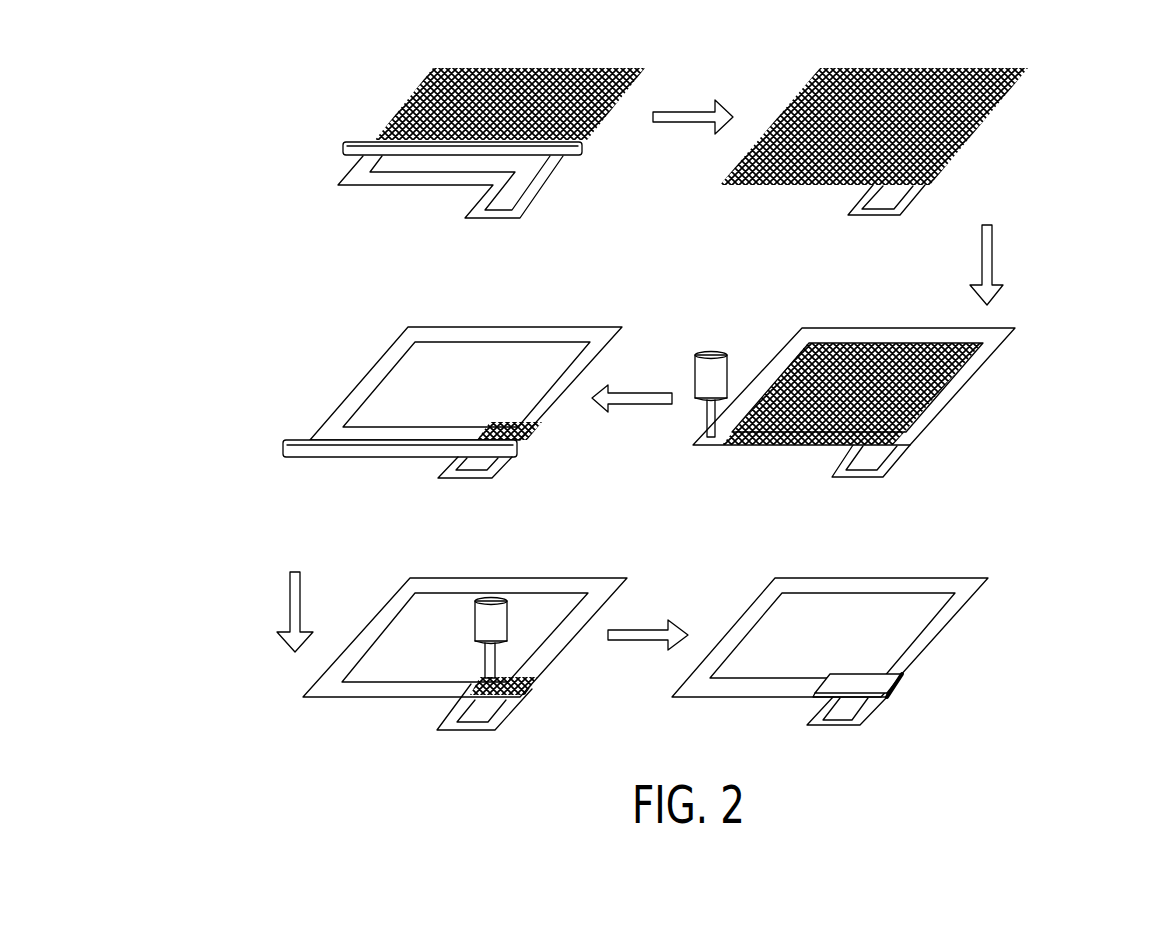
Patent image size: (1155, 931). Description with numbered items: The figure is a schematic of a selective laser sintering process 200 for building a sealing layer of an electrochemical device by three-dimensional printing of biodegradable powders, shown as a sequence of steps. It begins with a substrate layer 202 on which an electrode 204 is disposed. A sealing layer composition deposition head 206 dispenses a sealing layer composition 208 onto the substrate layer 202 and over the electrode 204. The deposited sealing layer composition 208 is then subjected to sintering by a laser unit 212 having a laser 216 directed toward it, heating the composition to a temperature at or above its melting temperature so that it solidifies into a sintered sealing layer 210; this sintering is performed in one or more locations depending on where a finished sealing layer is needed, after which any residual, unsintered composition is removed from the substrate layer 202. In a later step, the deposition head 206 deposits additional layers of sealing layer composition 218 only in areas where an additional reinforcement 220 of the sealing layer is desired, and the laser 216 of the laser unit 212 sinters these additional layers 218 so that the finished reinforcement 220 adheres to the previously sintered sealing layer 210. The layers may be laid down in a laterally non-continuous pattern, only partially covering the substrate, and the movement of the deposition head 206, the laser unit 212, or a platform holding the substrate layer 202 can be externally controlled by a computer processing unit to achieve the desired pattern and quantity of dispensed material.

The selective laser sintering process 200 is at (276, 124).
The substrate layer 202 is at (363, 181).
The electrode 204 is at (433, 166).
The sealing layer composition deposition head 206 is at (357, 142).
The sealing layer composition 208 is at (647, 80).
The sintered sealing layer 210 is at (960, 386).
The laser unit 212 is at (705, 378).
The laser 216 is at (706, 423).
The additional layers of sealing layer composition 218 is at (551, 431).
The reinforcement 220 is at (536, 679).